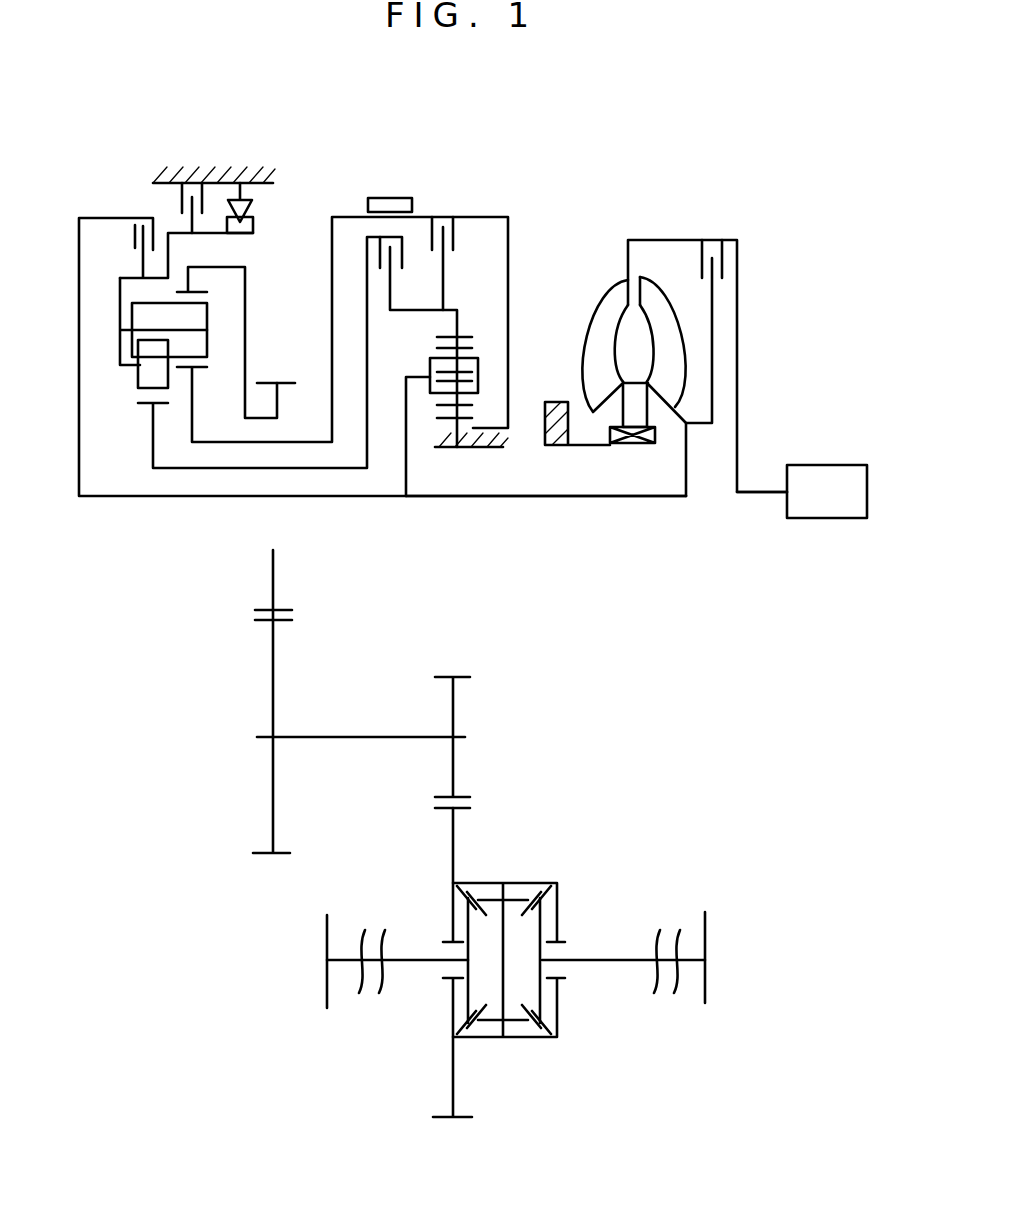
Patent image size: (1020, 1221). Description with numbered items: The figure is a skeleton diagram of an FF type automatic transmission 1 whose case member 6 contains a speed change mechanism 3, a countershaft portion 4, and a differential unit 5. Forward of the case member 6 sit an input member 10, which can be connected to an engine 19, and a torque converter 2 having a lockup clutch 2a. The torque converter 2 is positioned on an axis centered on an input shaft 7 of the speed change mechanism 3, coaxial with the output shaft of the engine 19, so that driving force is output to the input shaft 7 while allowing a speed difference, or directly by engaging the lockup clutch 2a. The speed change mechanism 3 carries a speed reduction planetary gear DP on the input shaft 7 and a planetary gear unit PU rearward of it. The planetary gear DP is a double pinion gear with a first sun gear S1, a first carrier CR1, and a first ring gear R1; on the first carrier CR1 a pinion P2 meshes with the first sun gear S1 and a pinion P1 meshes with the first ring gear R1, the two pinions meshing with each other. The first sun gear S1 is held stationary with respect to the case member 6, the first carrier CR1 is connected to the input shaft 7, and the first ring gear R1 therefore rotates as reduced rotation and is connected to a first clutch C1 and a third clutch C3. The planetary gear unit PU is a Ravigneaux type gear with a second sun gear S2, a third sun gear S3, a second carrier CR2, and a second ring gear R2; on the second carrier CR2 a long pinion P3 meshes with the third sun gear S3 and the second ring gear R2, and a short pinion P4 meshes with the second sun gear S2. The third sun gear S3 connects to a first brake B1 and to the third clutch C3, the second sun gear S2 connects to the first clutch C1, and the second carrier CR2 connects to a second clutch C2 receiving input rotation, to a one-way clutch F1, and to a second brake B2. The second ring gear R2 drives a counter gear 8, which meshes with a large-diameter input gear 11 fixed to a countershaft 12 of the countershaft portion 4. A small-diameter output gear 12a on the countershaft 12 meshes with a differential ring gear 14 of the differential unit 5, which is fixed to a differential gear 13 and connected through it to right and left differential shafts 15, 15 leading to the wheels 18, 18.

The automatic transmission 1 is at (420, 140).
The torque converter 2 is at (643, 217).
The lockup clutch 2a is at (707, 268).
The speed change mechanism 3 is at (332, 163).
The countershaft portion 4 is at (241, 715).
The differential unit 5 is at (589, 863).
The case member 6 is at (157, 178).
The input shaft 7 is at (493, 498).
The counter gear 8 is at (283, 383).
The input member 10 is at (753, 490).
The large-diameter input gear 11 is at (275, 655).
The countershaft 12 is at (357, 738).
The small-diameter output gear 12a is at (455, 698).
The differential gear 13 is at (528, 1042).
The differential ring gear 14 is at (455, 835).
The differential shaft 15 is at (398, 963).
The wheel 18 is at (325, 992).
The engine 19 is at (837, 465).
The planetary gear unit PU is at (96, 304).
The planetary gear DP is at (474, 316).
The first brake B1 is at (390, 190).
The second brake B2 is at (192, 183).
The first clutch C1 is at (418, 287).
The second clutch C2 is at (186, 234).
The third clutch C3 is at (444, 249).
The one-way clutch F1 is at (243, 183).
The first ring gear R1 is at (438, 336).
The second ring gear R2 is at (203, 292).
The pinion P1 is at (447, 349).
The pinion P2 is at (448, 404).
The long pinion P3 is at (208, 318).
The short pinion P4 is at (138, 375).
The first sun gear S1 is at (450, 418).
The second sun gear S2 is at (142, 403).
The third sun gear S3 is at (195, 370).
The first carrier CR1 is at (480, 385).
The second carrier CR2 is at (119, 290).